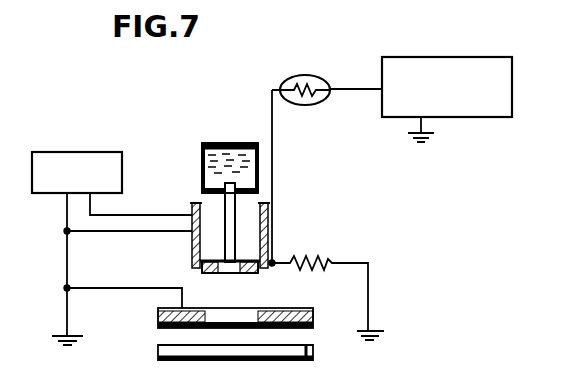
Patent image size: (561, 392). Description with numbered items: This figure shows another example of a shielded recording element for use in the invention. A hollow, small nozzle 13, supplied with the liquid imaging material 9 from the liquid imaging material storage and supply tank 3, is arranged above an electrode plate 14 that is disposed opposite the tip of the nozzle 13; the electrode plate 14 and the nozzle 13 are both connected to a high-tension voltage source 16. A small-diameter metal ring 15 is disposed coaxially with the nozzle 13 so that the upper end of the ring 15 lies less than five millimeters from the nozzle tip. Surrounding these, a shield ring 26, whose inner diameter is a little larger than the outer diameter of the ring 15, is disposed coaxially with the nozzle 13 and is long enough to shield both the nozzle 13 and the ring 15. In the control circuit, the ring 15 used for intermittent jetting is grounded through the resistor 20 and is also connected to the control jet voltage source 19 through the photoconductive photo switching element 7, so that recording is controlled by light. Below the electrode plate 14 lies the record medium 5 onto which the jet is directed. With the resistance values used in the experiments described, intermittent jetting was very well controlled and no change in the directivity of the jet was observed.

The liquid imaging material storage and supply tank 3 is at (202, 165).
The record medium 5 is at (305, 356).
The photoconductive photo switching element 7 is at (308, 75).
The liquid imaging material 9 is at (239, 145).
The nozzle 13 is at (225, 247).
The electrode plate 14 is at (311, 311).
The metal ring 15 is at (207, 273).
The high-tension voltage source 16 is at (113, 152).
The control jet voltage source 19 is at (423, 57).
The resistor 20 is at (320, 258).
The shield ring 26 is at (268, 216).